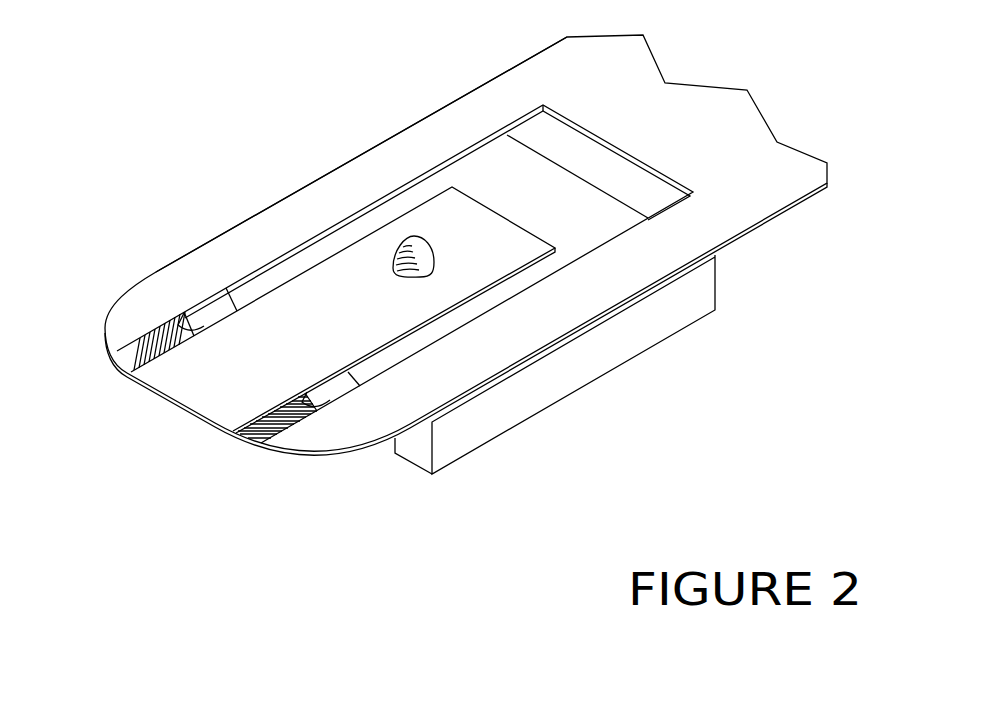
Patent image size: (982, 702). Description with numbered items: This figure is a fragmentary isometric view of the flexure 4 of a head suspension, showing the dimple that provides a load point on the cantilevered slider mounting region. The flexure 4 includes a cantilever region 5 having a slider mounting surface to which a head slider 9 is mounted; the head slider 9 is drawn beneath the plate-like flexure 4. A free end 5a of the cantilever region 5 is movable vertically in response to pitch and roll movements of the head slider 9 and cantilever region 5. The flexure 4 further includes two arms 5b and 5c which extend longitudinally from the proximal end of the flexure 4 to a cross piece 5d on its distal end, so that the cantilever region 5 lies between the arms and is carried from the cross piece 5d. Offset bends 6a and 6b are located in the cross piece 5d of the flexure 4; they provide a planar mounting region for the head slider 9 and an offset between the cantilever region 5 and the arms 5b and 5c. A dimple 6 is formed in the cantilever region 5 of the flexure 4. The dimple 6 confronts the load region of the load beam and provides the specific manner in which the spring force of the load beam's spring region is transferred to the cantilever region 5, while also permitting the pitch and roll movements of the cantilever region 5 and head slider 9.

The flexure 4 is at (775, 183).
The cantilever region 5 is at (248, 368).
The free end 5a is at (441, 212).
The arm 5b is at (284, 231).
The arm 5c is at (410, 405).
The cross piece 5d is at (183, 378).
The dimple 6 is at (423, 257).
The offset bend 6a is at (122, 363).
The offset bend 6b is at (253, 433).
The head slider 9 is at (657, 323).